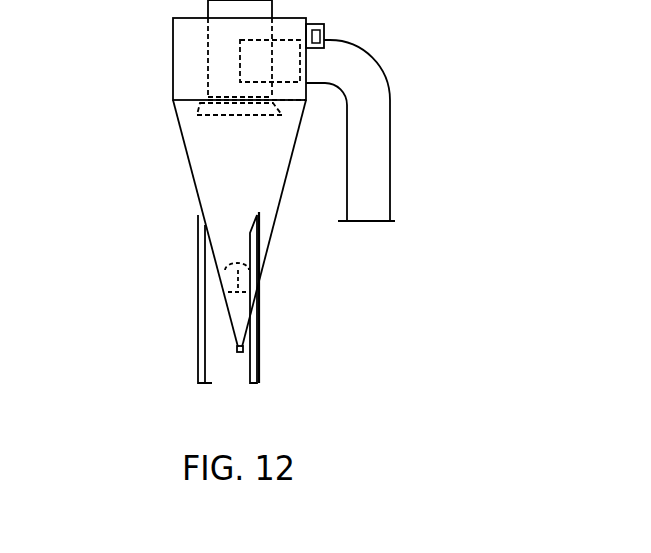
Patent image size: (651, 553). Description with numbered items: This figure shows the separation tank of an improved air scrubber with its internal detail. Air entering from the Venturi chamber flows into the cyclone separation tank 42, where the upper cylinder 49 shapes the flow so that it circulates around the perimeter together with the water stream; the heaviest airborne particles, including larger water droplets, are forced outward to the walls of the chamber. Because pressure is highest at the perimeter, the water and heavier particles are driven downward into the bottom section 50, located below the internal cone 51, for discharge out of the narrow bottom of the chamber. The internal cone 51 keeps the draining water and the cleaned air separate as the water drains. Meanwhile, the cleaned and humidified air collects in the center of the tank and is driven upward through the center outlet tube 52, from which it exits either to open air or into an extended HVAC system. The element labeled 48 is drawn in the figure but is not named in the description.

The cyclone separation tank 42 is at (204, 167).
The dust outlet 48 is at (262, 347).
The upper cylinder 49 is at (172, 55).
The bottom section 50 is at (212, 279).
The internal cone 51 is at (268, 272).
The center outlet tube 52 is at (194, 95).